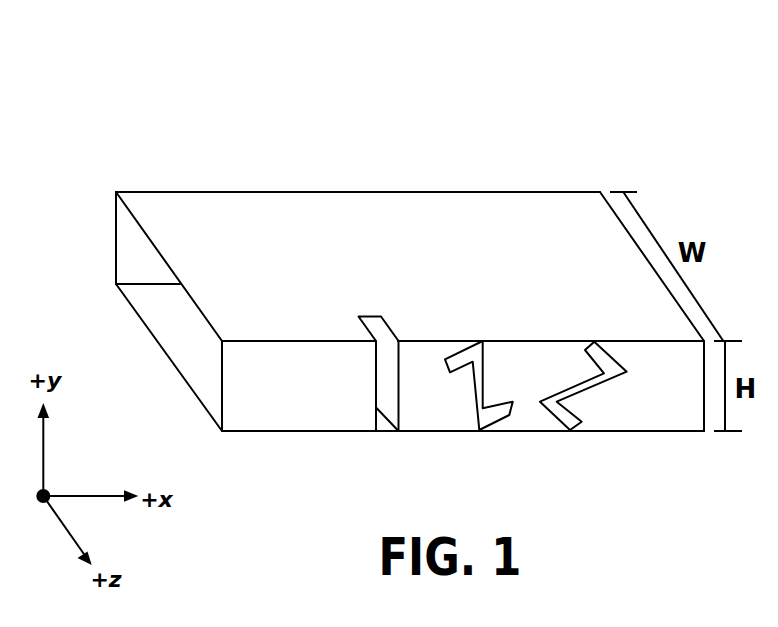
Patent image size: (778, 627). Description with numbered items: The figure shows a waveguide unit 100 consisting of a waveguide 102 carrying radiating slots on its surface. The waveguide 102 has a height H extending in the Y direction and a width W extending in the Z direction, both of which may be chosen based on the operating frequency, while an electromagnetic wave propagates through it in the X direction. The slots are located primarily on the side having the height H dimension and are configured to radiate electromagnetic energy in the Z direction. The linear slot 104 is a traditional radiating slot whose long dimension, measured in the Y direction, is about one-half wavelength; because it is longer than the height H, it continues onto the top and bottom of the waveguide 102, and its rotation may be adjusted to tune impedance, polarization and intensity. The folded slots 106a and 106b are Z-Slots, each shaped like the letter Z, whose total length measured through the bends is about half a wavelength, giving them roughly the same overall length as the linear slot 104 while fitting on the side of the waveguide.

The waveguide unit 100 is at (168, 111).
The waveguide 102 is at (245, 433).
The linear slot 104 is at (388, 430).
The folded slot 106a is at (498, 426).
The folded slot 106b is at (562, 426).